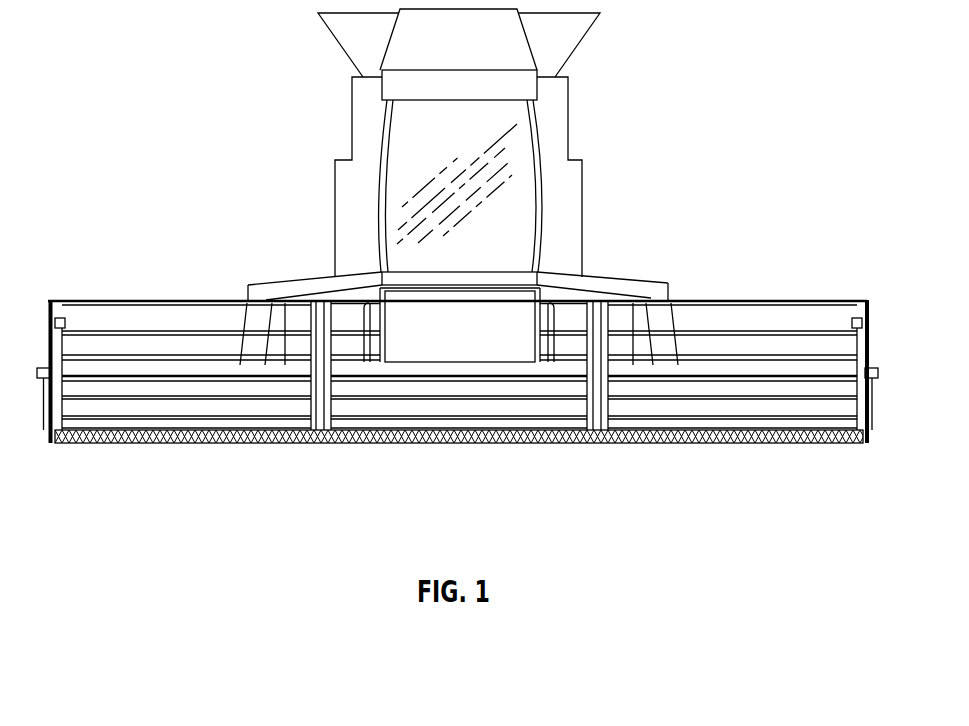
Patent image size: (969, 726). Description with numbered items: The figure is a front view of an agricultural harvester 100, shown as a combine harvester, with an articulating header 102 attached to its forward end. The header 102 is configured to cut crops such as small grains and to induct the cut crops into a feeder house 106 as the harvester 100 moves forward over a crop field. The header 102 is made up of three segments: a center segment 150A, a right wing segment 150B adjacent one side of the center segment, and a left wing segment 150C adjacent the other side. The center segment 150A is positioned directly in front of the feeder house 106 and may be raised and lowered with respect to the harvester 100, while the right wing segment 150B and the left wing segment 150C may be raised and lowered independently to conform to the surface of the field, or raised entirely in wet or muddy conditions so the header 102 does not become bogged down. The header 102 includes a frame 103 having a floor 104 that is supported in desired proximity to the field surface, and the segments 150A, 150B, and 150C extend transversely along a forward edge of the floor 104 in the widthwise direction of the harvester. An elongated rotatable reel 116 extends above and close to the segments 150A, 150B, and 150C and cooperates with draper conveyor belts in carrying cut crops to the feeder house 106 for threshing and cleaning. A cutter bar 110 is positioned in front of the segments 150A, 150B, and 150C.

The agricultural harvester 100 is at (240, 143).
The header 102 is at (103, 288).
The frame 103 is at (818, 297).
The floor 104 is at (160, 430).
The feeder house 106 is at (502, 300).
The cutter bar 110 is at (482, 442).
The rotatable reel 116 is at (783, 392).
The center segment 150A is at (593, 445).
The right wing segment 150B is at (315, 445).
The left wing segment 150C is at (872, 445).